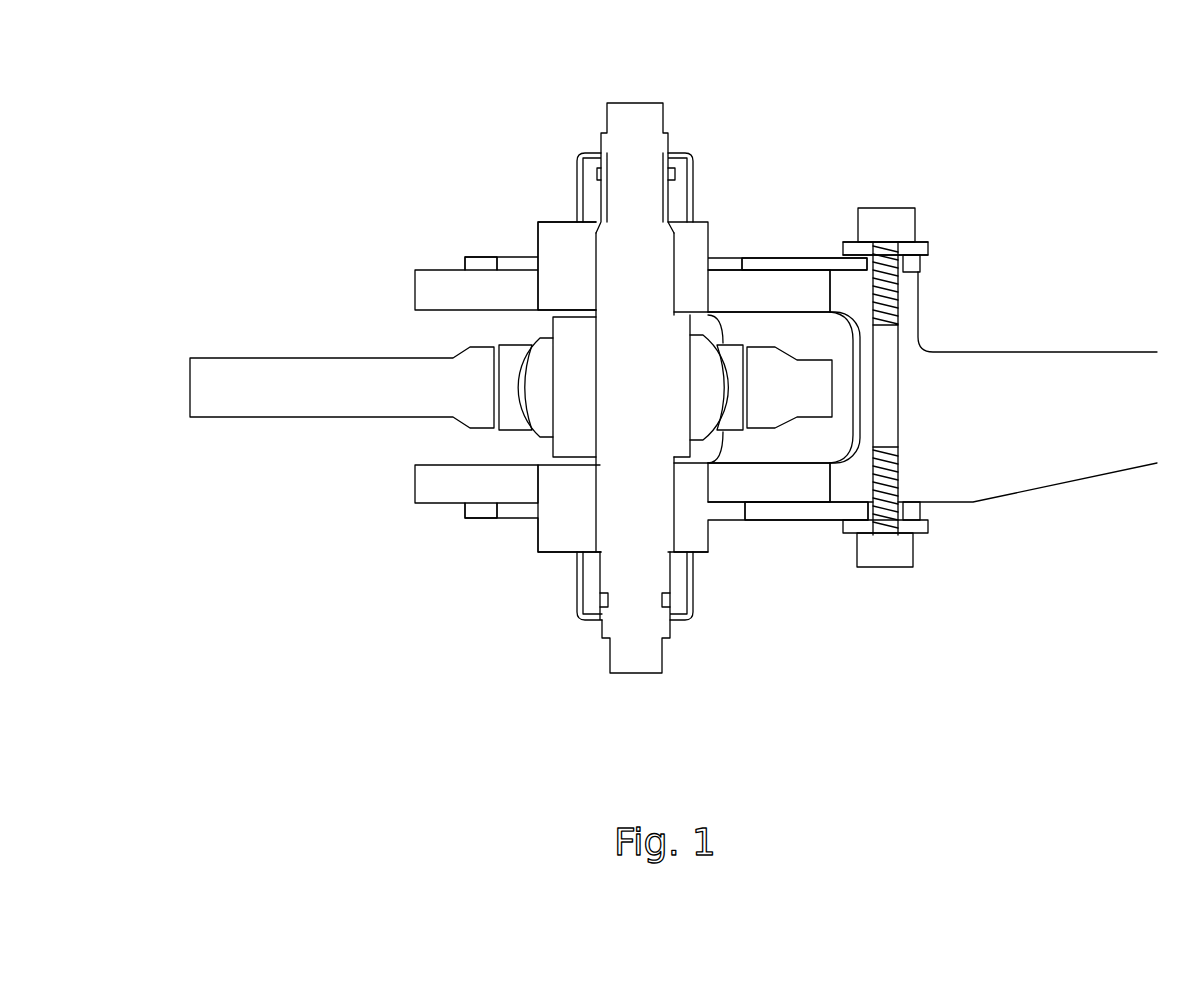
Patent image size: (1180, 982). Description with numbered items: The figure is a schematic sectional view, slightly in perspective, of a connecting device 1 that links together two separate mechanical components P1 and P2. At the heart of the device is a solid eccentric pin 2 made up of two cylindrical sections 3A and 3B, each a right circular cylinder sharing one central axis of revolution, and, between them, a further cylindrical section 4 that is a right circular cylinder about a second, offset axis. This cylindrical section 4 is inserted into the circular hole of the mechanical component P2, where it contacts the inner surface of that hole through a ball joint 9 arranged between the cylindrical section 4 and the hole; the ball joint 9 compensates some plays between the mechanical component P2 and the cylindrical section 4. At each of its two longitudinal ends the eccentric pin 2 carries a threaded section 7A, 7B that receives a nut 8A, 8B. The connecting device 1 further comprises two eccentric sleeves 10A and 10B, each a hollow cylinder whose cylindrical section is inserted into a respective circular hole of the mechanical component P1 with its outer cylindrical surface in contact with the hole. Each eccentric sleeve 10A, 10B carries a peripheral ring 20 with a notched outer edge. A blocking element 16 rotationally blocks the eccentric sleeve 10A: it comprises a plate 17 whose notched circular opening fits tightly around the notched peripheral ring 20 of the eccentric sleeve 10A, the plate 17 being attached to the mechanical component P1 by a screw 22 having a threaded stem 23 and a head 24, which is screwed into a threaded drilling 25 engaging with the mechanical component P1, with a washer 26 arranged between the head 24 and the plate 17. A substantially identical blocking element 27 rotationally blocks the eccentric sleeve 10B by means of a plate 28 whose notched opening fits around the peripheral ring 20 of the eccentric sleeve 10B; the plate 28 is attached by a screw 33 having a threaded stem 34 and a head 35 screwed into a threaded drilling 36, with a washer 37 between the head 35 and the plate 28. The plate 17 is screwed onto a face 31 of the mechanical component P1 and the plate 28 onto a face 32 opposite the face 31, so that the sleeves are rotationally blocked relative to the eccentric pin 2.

The connecting device 1 is at (414, 102).
The eccentric pin 2 is at (648, 176).
The cylindrical section 3A is at (606, 522).
The cylindrical section 3B is at (610, 270).
The cylindrical section 4 is at (566, 436).
The threaded section 7A is at (633, 645).
The threaded section 7B is at (628, 162).
The nut 8A is at (688, 607).
The nut 8B is at (682, 185).
The ball joint 9 is at (540, 343).
The eccentric sleeve 10A is at (555, 530).
The eccentric sleeve 10B is at (550, 240).
The blocking element 16 is at (789, 530).
The plate 17 is at (817, 512).
The peripheral ring 20 is at (510, 257).
The screw 22 is at (886, 580).
The threaded stem 23 is at (890, 527).
The head 24 is at (915, 550).
The threaded drilling 25 is at (912, 478).
The washer 26 is at (962, 520).
The blocking element 27 is at (757, 250).
The plate 28 is at (806, 262).
The face 31 is at (1043, 477).
The face 32 is at (848, 208).
The screw 33 is at (1000, 389).
The threaded stem 34 is at (905, 312).
The head 35 is at (905, 222).
The threaded drilling 36 is at (912, 290).
The washer 37 is at (928, 250).
The mechanical component P1 is at (914, 465).
The mechanical component P2 is at (218, 405).